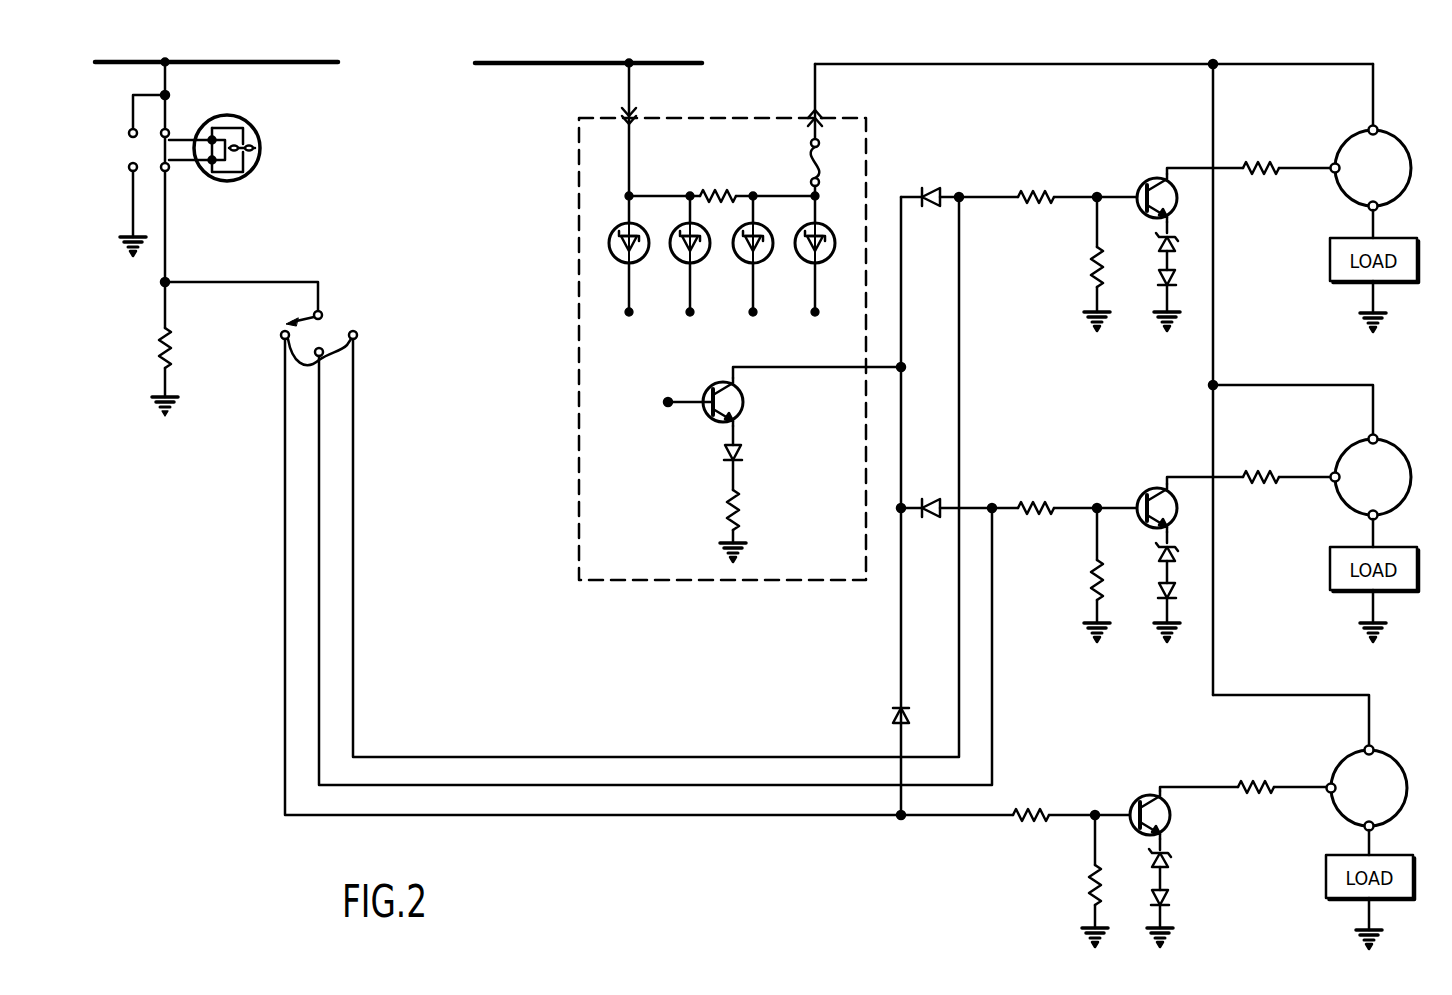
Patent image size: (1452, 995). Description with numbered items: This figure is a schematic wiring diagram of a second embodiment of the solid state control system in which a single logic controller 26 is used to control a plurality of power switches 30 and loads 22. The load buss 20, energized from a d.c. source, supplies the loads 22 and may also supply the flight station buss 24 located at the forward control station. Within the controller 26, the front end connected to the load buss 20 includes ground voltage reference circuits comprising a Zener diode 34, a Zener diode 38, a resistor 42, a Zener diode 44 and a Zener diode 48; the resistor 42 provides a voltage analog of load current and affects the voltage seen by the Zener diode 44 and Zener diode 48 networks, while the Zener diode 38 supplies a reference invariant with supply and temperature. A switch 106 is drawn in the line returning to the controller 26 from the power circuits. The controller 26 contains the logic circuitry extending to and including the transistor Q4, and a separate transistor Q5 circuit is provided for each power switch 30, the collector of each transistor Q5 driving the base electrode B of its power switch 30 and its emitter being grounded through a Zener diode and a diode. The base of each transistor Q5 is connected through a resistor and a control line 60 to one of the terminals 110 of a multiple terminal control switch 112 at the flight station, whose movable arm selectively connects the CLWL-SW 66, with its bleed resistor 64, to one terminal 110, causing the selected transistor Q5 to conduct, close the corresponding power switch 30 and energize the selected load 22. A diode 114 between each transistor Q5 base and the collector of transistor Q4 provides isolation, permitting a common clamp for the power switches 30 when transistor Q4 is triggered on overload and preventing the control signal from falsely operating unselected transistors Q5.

The load buss 20 is at (643, 62).
The load 22 is at (1330, 257).
The flight station buss 24 is at (268, 62).
The controller portion 26 is at (578, 388).
The power switch 30 is at (1400, 141).
The Zener diode 34 is at (624, 263).
The Zener diode 38 is at (685, 263).
The resistor 42 is at (706, 192).
The Zener diode 44 is at (748, 263).
The Zener diode 48 is at (809, 263).
The control line 60 is at (709, 815).
The bleed resistor 64 is at (158, 362).
The current limiting warning light switch (CLWL-SW) 66 is at (257, 125).
The switch 106 is at (810, 148).
The terminals 110 is at (345, 359).
The multiple terminal control switch 112 is at (310, 316).
The diode 114 is at (938, 192).
The transistor Q4 is at (745, 401).
The NPN transistor Q5 is at (1140, 186).